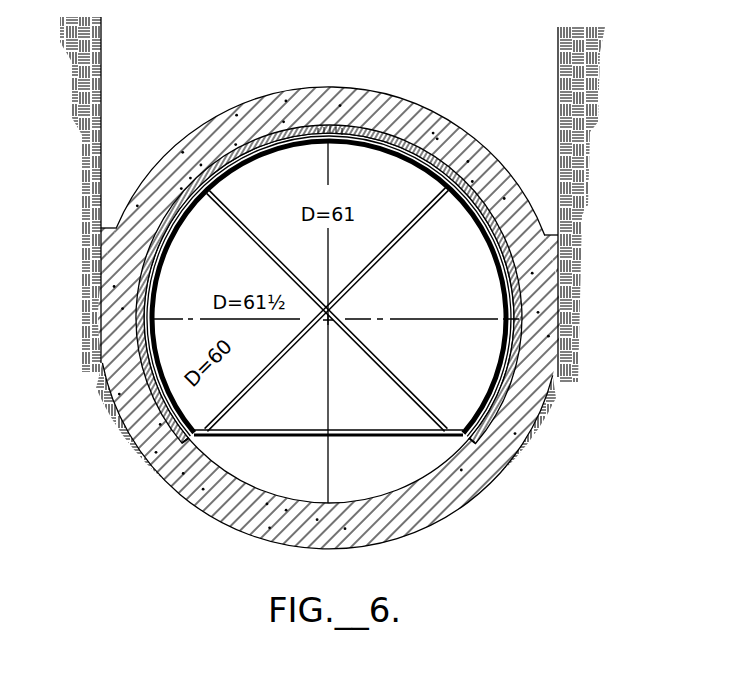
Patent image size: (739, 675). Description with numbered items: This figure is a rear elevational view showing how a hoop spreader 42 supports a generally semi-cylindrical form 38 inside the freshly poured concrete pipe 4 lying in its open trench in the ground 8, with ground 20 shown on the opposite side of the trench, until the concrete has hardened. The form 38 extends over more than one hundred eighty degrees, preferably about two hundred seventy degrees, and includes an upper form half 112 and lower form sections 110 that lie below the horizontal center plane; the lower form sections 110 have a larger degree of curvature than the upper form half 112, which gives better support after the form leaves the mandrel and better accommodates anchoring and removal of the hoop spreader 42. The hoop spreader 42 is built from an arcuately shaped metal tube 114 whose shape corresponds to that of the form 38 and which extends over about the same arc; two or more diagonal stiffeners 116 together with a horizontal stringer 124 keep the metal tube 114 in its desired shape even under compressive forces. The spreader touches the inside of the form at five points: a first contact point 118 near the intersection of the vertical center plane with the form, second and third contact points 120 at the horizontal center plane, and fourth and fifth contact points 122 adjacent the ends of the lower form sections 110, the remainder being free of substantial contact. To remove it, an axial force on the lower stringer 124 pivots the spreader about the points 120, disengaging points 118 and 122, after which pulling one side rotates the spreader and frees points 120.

The concrete pipe 4 is at (115, 258).
The ground 8 is at (583, 27).
The earth 20 is at (104, 46).
The semi-cylindrical form 38 is at (240, 145).
The hoop spreader 42 is at (403, 150).
The lower form section 110 is at (130, 360).
The upper form half 112 is at (300, 120).
The arcuately shaped metal tube 114 is at (172, 237).
The diagonal stiffener 116 is at (366, 283).
The first contact point 118 is at (335, 128).
The second and third contact points 120 is at (130, 316).
The fourth and fifth contact points 122 is at (138, 451).
The horizontal stringer 124 is at (298, 430).